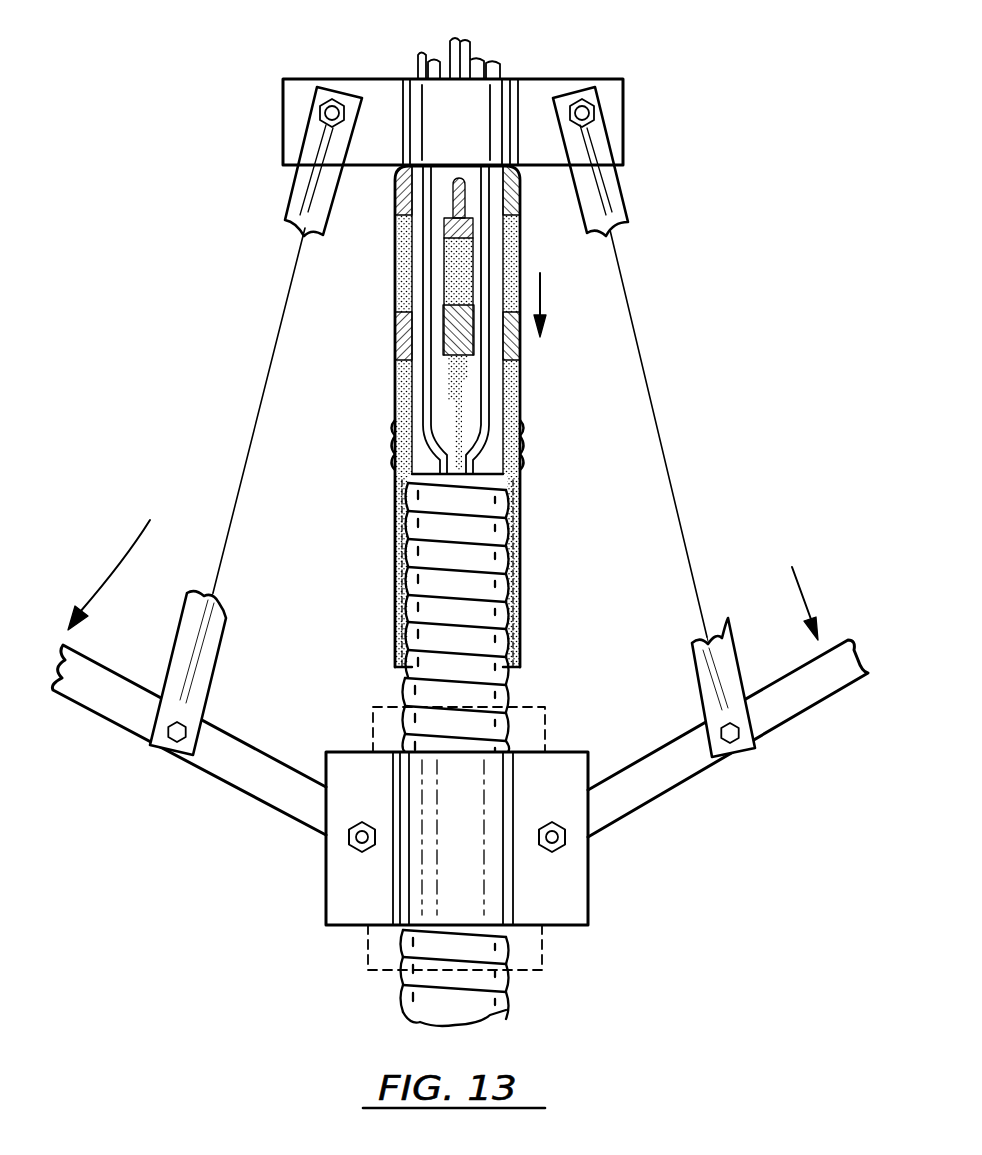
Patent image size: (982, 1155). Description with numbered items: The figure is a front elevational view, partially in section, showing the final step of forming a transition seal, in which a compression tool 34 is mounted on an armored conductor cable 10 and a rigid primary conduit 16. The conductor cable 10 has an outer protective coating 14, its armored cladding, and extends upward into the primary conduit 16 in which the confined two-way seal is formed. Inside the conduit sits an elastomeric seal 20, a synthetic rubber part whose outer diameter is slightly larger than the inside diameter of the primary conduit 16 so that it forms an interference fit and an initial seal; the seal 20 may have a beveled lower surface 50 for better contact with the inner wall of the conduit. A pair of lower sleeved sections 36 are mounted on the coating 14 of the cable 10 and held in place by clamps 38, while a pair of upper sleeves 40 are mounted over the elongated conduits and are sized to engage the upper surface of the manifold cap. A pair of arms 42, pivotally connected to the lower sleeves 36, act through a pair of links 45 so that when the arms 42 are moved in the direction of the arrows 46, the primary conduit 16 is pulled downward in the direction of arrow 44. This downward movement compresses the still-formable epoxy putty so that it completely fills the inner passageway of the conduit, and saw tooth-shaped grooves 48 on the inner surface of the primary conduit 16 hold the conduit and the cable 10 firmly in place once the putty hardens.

The conductor cable 10 is at (508, 1005).
The outer protective coating 14 is at (505, 684).
The primary conduit 16 is at (520, 522).
The elastomeric seal 20 is at (400, 323).
The compression tool 34 is at (708, 531).
The lower sleeved sections 36 is at (348, 905).
The clamps 38 is at (535, 725).
The upper sleeves 40 is at (492, 97).
The arms 42 is at (115, 714).
The arrow 44 is at (541, 300).
The links 45 is at (292, 200).
The arrows 46 is at (140, 530).
The saw tooth-shaped grooves 48 is at (520, 462).
The beveled lower surface 50 is at (400, 395).